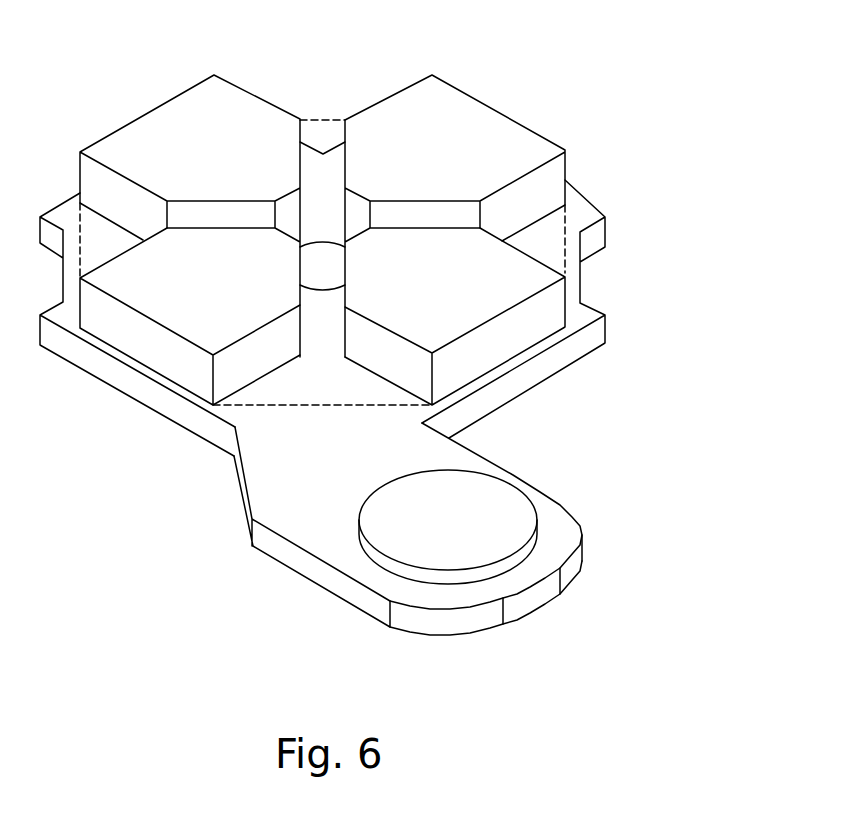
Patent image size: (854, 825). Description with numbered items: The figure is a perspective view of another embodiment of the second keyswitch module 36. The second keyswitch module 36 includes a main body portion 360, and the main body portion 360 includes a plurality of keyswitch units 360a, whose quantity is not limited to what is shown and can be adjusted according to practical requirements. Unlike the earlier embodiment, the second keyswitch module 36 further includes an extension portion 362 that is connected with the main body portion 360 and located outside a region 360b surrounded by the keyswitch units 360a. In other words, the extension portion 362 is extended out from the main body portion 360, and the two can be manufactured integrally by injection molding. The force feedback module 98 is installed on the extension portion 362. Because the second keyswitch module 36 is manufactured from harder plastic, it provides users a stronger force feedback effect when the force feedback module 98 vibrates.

The second keyswitch module 36 is at (391, 322).
The main body portion 360 is at (582, 207).
The keyswitch units 360a is at (167, 140).
The region 360b is at (548, 256).
The extension portion 362 is at (290, 465).
The force feedback module 98 is at (490, 508).